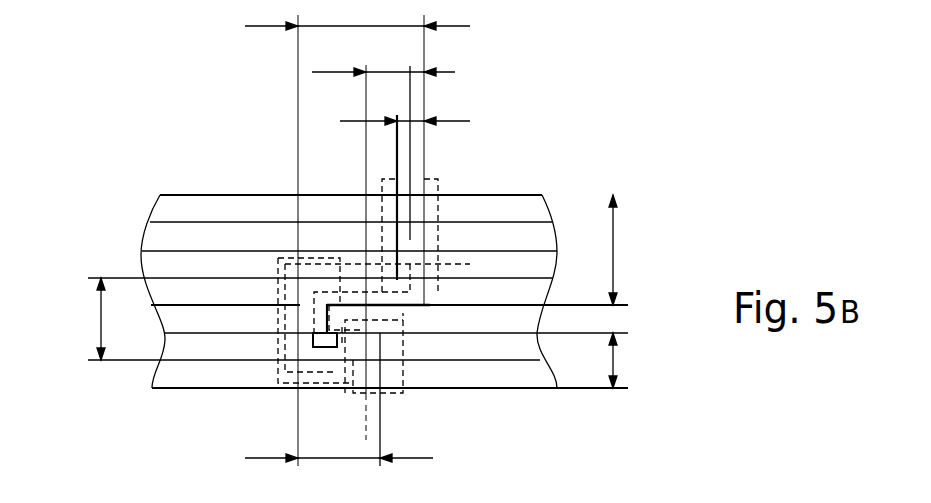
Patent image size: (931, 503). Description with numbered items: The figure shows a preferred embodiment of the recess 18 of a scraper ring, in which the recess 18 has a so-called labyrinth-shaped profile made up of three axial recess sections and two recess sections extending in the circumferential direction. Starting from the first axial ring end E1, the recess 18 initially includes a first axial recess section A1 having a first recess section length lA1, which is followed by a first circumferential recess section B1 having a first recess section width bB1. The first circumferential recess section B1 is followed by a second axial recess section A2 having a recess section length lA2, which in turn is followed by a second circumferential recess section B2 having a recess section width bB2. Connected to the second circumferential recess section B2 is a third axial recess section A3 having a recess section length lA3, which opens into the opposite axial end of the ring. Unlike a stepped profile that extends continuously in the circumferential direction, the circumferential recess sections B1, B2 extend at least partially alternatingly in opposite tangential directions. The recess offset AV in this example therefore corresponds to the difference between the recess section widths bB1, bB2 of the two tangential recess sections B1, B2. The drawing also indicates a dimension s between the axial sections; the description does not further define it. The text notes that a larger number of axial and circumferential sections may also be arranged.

The first axial ring end E1 is at (222, 189).
The first axial recess section A1 is at (440, 182).
The second axial recess section A2 is at (277, 278).
The third axial recess section A3 is at (405, 340).
The first circumferential recess section B1 is at (290, 259).
The second circumferential recess section B2 is at (393, 372).
The recess 18 is at (308, 352).
The first recess section width bB1 is at (357, 233).
The recess section width of B2 bB2 is at (339, 440).
The recess offset AV is at (383, 241).
The gap width s is at (405, 107).
The first recess section length lA1 is at (631, 250).
The recess section length of A2 lA2 is at (118, 319).
The recess section length of A3 lA3 is at (634, 360).